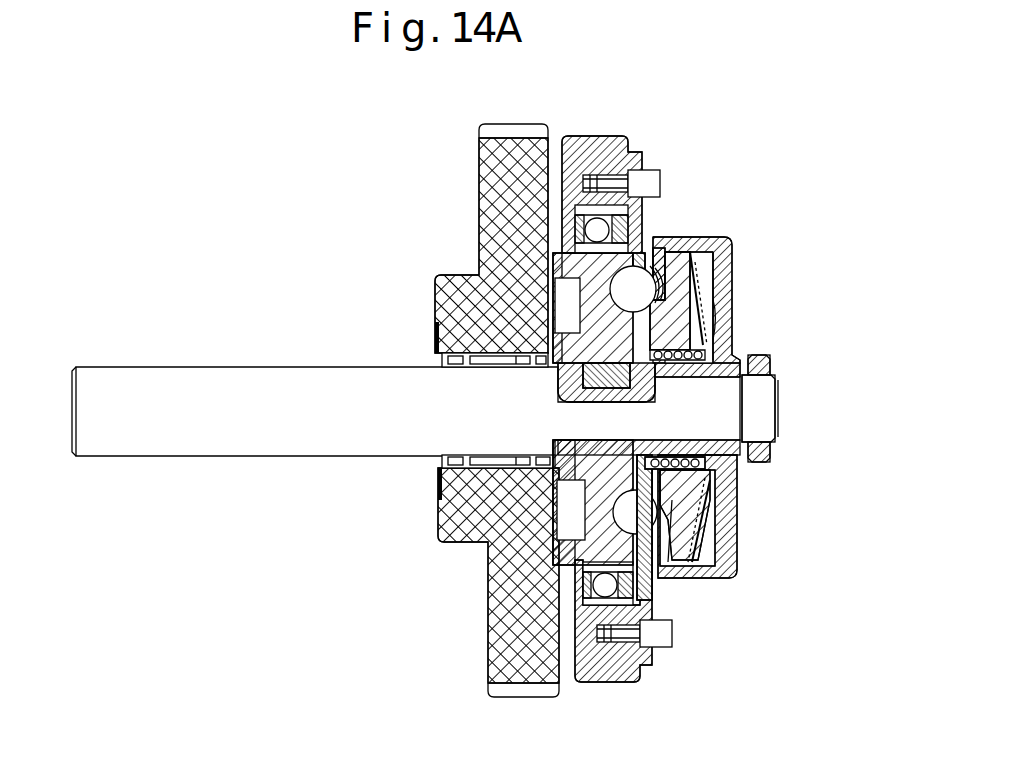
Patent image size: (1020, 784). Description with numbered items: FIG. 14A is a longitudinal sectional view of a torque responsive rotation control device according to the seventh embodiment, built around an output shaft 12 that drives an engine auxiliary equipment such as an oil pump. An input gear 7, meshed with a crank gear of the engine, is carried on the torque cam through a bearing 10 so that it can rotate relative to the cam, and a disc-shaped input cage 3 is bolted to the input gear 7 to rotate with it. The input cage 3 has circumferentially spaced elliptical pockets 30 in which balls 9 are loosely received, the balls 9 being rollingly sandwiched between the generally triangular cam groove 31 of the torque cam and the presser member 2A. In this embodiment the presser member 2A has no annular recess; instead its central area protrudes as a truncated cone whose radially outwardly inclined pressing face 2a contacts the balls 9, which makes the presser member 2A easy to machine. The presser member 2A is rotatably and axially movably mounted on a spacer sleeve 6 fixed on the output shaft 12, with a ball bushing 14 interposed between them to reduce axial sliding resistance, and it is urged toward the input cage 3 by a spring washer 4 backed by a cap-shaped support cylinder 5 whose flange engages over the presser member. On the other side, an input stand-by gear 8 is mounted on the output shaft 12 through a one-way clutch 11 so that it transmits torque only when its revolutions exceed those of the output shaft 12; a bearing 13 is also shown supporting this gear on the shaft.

The output shaft 12 is at (312, 392).
The bearing 13 is at (548, 342).
The input stand-by gear 8 is at (478, 200).
The one-way clutch 11 is at (437, 542).
The input gear 7 is at (595, 163).
The bearing 10 is at (670, 238).
The input cage 3 is at (655, 232).
The cam groove 31 is at (683, 242).
The balls 9 is at (700, 240).
The support cylinder 5 is at (733, 270).
The pressing face 2a is at (733, 298).
The pockets 30 is at (703, 320).
The ball bushing 14 is at (703, 328).
The spacer sleeve 6 is at (727, 462).
The spring washer 4 is at (735, 517).
The presser member 2A is at (685, 533).